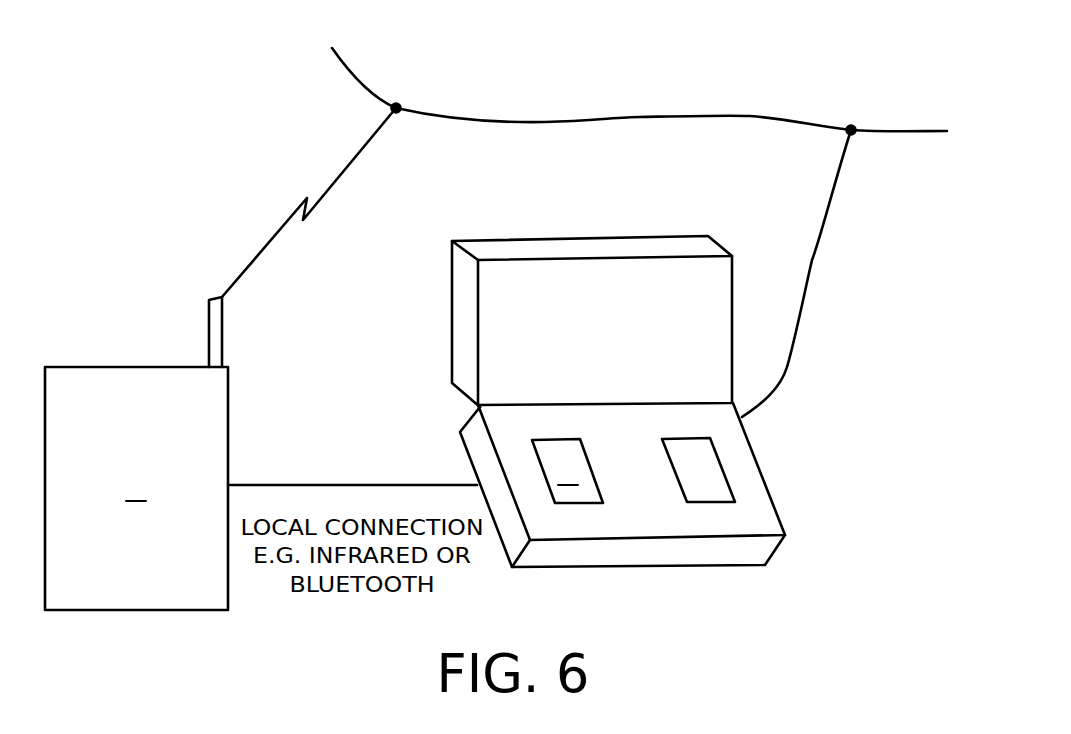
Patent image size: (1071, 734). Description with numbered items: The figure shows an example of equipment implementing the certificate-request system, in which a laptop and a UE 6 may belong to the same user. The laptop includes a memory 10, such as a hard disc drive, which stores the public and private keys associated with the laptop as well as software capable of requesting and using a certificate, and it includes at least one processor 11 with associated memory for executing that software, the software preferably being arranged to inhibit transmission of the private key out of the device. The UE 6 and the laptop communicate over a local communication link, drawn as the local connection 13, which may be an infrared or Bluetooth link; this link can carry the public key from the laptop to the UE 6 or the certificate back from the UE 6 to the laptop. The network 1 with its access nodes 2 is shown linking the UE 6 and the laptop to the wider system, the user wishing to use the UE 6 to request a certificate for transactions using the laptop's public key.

The network 1 is at (637, 83).
The network access node 2 is at (397, 108).
The UE 6 is at (76, 367).
The memory 10 is at (577, 503).
The processor 11 is at (723, 468).
The local connection 13 is at (351, 484).